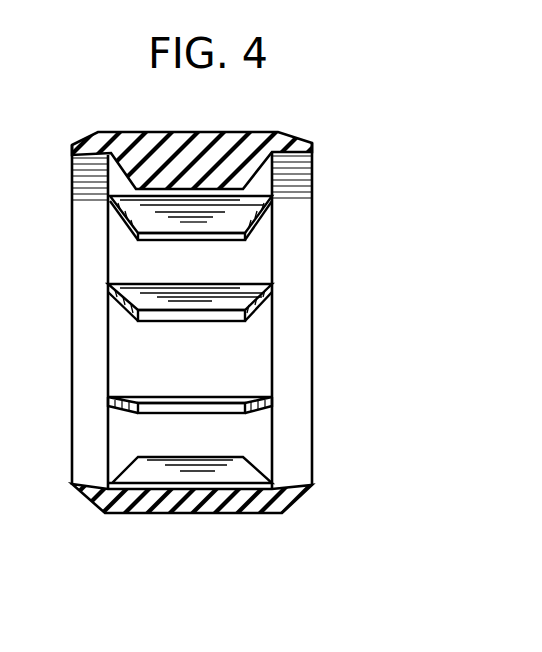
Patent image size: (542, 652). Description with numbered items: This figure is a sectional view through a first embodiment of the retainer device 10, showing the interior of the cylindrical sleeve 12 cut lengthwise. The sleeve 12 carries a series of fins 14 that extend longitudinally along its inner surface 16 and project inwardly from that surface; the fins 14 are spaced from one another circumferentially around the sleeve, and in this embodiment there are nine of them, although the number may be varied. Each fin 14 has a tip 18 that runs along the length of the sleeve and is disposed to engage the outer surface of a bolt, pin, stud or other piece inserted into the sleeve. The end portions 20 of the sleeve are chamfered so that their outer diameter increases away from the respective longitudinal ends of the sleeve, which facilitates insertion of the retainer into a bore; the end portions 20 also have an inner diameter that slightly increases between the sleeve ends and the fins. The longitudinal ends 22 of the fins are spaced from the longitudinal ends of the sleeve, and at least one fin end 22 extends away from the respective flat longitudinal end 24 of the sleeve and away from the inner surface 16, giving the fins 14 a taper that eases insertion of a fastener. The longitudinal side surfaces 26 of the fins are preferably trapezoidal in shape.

The device 10 is at (58, 445).
The cylindrical sleeve 12 is at (158, 513).
The fins 14 is at (250, 278).
The inner surface 16 is at (262, 443).
The tips 18 is at (222, 322).
The end portions 20 is at (101, 132).
The longitudinal ends of the fins 22 is at (126, 238).
The longitudinal end of the sleeve 24 is at (90, 344).
The longitudinal side surfaces 26 is at (274, 211).